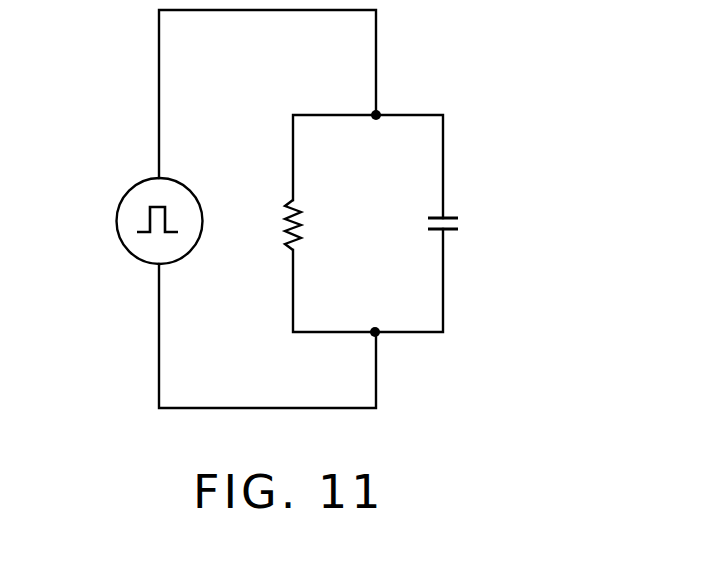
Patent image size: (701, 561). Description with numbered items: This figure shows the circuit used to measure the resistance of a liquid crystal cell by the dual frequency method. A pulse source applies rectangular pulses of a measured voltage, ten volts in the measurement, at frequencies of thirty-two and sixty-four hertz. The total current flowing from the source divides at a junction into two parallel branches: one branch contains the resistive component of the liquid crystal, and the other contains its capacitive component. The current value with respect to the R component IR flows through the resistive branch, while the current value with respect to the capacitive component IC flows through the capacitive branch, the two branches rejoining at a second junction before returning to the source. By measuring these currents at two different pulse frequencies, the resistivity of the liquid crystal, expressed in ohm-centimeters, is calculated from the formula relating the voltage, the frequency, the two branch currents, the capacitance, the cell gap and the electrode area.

The current value with respect to an R component IR is at (313, 140).
The current value with respect to a capacitive component IC is at (469, 140).